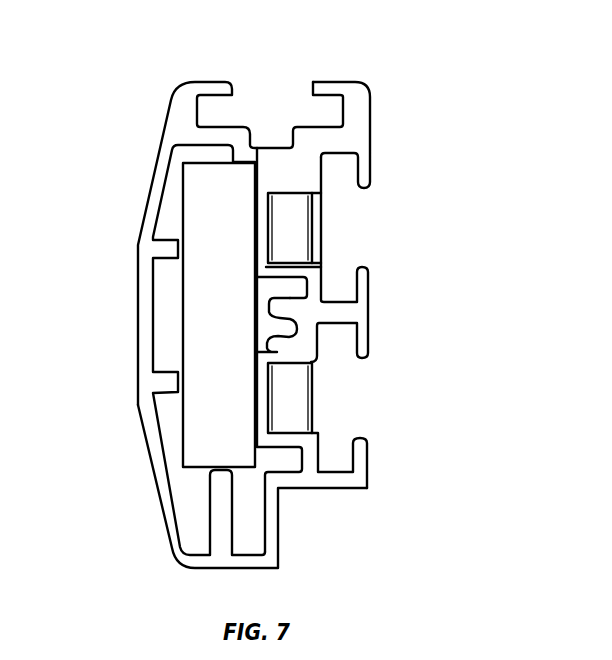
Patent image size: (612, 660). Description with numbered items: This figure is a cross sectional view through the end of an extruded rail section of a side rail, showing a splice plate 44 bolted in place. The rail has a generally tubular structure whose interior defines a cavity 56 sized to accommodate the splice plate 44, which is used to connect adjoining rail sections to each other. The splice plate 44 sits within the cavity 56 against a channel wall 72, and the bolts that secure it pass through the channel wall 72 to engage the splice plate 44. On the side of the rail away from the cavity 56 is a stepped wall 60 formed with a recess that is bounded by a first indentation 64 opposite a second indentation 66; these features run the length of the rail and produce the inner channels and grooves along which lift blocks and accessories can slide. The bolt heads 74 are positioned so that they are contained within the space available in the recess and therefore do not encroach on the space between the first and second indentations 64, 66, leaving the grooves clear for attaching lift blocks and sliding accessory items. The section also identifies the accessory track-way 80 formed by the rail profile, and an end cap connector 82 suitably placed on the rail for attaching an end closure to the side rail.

The accessory track-way 80 is at (270, 95).
The second indentation 66 is at (337, 177).
The cavity 56 is at (167, 317).
The channel wall 72 is at (260, 418).
The splice plate 44 is at (213, 417).
The stepped wall 60 is at (312, 280).
The end cap connector 82 is at (284, 306).
The bolt heads 74 is at (312, 227).
The first indentation 64 is at (333, 452).